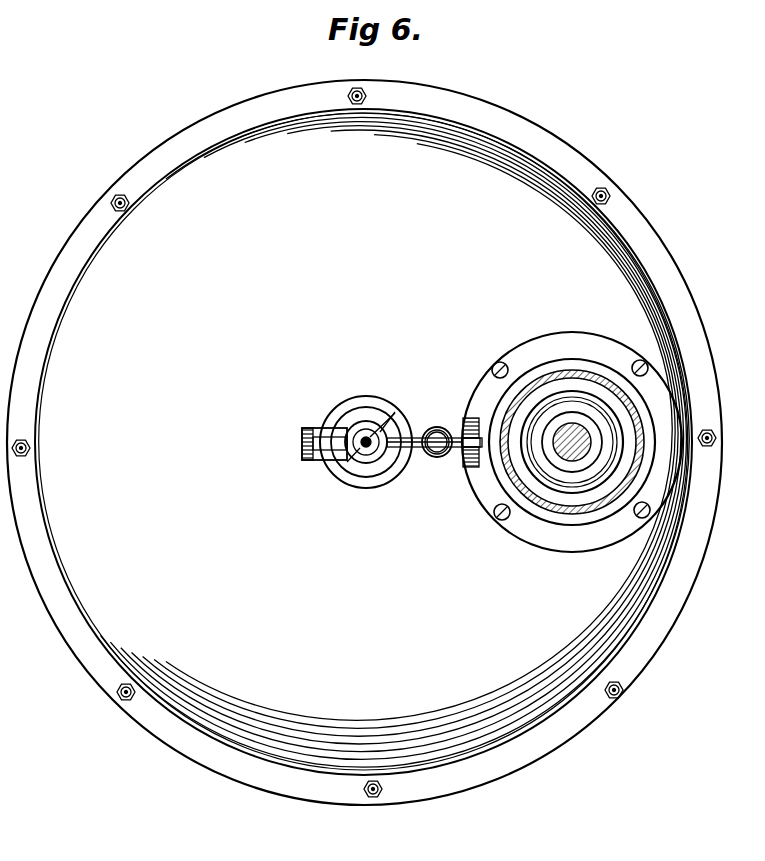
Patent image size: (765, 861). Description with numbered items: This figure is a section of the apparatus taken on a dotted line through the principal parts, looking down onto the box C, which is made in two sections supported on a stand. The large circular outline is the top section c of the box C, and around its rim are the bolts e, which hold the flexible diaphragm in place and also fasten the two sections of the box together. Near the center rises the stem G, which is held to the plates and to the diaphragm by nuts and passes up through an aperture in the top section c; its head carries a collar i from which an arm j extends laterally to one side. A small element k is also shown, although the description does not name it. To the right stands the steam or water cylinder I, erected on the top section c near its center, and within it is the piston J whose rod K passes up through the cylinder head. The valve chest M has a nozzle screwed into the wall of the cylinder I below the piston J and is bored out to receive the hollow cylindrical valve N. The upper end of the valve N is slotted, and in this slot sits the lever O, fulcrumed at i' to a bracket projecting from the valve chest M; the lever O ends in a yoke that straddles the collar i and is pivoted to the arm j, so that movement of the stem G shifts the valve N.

The box C is at (364, 442).
The top section of the box c is at (395, 440).
The bolts e is at (128, 212).
The stem G is at (382, 407).
The hub pivot k is at (357, 470).
The arm j is at (333, 423).
The collar i is at (430, 421).
The fulcrum i' is at (464, 417).
The lever O is at (437, 458).
The hollow cylindrical valve N is at (437, 410).
The valve chest M is at (440, 460).
The piston J is at (557, 477).
The steam or water cylinder I is at (544, 363).
The piston rod K is at (575, 417).